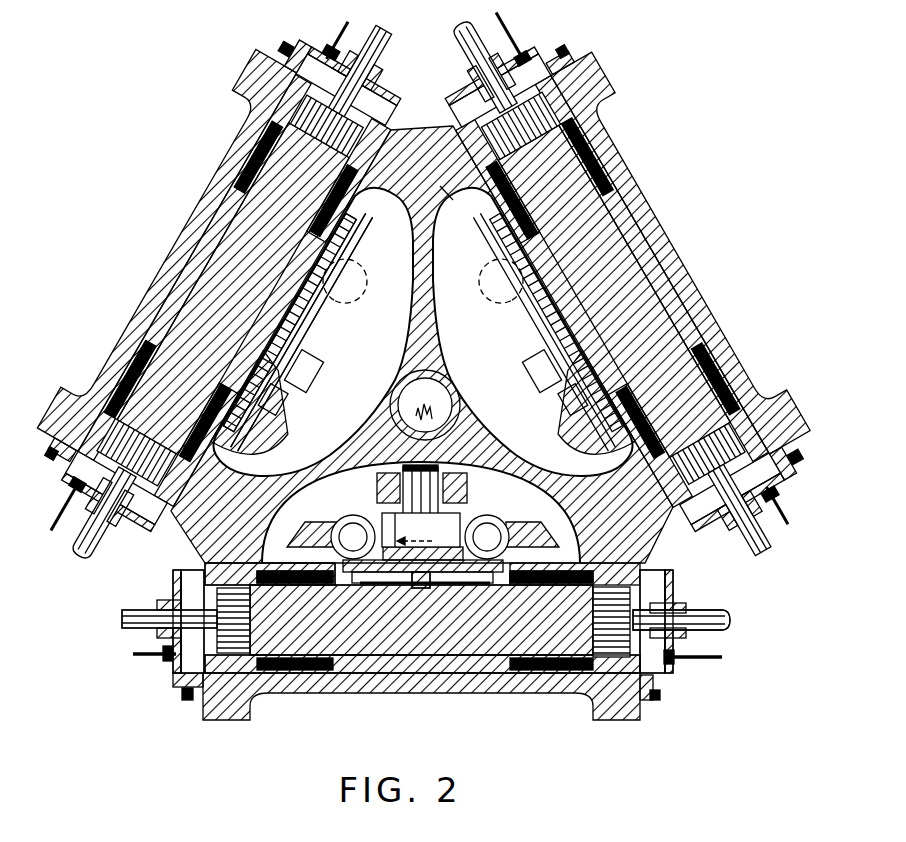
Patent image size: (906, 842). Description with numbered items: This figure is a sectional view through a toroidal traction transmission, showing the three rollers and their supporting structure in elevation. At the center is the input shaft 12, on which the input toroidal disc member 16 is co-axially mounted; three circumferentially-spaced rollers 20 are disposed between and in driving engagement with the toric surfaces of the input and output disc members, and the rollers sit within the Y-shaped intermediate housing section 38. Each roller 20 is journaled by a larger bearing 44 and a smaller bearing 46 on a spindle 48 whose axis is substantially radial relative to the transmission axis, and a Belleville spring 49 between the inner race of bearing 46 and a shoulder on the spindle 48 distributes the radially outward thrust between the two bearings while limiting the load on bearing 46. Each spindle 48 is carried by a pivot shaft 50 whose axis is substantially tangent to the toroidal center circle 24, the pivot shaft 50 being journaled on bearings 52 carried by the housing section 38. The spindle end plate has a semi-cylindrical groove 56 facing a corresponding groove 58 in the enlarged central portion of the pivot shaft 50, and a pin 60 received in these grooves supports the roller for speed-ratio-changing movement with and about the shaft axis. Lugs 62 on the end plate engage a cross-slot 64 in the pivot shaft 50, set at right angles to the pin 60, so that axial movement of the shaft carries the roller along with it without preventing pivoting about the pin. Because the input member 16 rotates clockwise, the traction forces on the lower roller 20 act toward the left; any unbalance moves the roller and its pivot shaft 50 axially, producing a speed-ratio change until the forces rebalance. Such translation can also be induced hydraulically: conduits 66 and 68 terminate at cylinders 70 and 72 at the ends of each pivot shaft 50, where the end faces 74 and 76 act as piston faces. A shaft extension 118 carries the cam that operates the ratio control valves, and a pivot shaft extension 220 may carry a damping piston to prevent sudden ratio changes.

The input shaft 12 is at (417, 405).
The input toroidal disc member 16 is at (567, 505).
The roller 20 is at (248, 452).
The toroidal center circle 24 is at (268, 257).
The intermediate housing section 38 is at (447, 188).
The bearing 44 is at (346, 535).
The bearing 46 is at (373, 485).
The spindle 48 is at (421, 530).
The spring 49 is at (395, 530).
The pivot shaft 50 is at (196, 321).
The bearings 52 is at (263, 142).
The semi-cylindrical groove 56 is at (392, 549).
The groove 58 is at (342, 575).
The pin 60 is at (393, 577).
The lugs 62 is at (273, 313).
The cross-slot 64 is at (270, 320).
The conduit 66 is at (504, 20).
The conduit 68 is at (347, 25).
The cylinder 70 is at (396, 88).
The cylinder 72 is at (538, 53).
The end face 74 is at (441, 367).
The end face 76 is at (373, 368).
The shaft extension 118 is at (424, 64).
The pivot shaft extension 220 is at (396, 55).